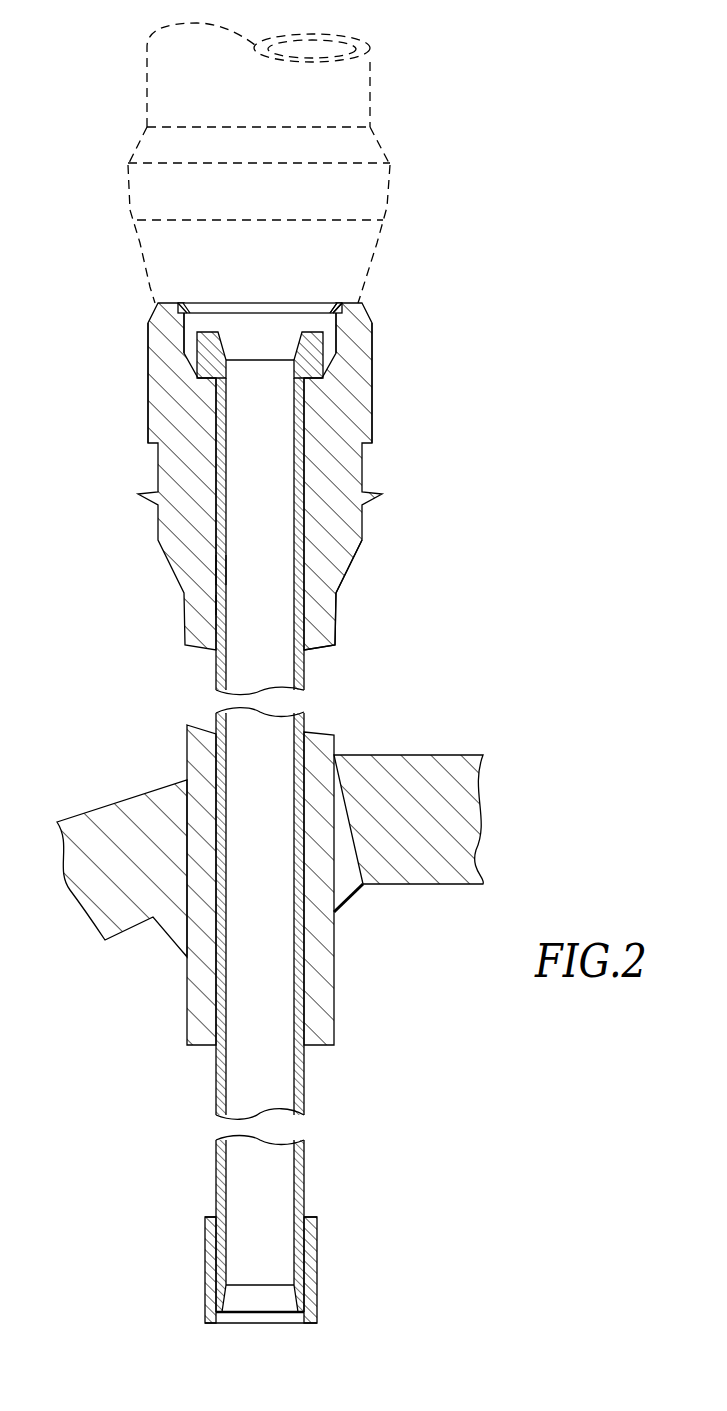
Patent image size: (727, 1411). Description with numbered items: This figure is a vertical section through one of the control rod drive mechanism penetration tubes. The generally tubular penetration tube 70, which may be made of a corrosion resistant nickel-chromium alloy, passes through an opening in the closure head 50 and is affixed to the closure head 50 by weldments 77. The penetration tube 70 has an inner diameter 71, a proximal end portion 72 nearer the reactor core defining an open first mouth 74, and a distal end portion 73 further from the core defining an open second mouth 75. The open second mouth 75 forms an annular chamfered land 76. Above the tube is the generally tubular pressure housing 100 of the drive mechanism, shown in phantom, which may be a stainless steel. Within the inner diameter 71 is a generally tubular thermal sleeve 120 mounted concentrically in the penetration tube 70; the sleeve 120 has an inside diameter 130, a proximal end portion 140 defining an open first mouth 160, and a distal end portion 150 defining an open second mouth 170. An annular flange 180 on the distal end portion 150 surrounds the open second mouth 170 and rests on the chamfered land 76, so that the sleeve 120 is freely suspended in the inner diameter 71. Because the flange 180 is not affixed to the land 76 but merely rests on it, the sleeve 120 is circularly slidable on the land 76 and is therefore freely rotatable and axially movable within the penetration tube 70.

The pressure housing 100 is at (147, 75).
The open second mouth 170 is at (185, 357).
The open second mouth 75 is at (187, 327).
The distal end portion 73 is at (148, 350).
The distal end portion 150 is at (216, 418).
The annular flange 180 is at (323, 333).
The annular chamfered land 76 is at (336, 340).
The inside diameter 130 is at (228, 555).
The thermal sleeve 120 is at (213, 602).
The penetration tube 70 is at (200, 635).
The inner diameter 71 is at (306, 608).
The closure head 50 is at (376, 782).
The weldments 77 is at (343, 907).
The proximal end portion 72 is at (187, 1000).
The open first mouth 74 is at (234, 1038).
The proximal end portion 140 is at (216, 1163).
The open first mouth 160 is at (228, 1262).